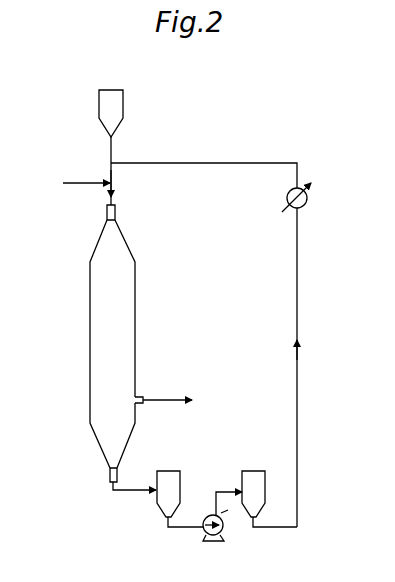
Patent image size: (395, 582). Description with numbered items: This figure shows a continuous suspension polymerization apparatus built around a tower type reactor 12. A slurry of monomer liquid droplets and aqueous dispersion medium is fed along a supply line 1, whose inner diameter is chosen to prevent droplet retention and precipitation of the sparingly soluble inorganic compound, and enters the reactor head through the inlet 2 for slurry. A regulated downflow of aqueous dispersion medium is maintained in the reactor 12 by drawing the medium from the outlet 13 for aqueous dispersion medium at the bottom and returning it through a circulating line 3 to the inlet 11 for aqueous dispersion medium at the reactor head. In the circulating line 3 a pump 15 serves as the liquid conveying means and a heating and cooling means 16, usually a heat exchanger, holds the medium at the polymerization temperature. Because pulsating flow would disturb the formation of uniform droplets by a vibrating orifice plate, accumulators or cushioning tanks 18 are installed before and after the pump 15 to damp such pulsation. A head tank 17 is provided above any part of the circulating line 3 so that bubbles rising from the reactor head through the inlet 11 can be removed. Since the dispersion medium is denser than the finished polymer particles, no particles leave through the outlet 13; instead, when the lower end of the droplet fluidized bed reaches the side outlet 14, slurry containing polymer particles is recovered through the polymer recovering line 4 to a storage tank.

The supply line 1 is at (88, 185).
The inlet for slurry 2 is at (111, 182).
The circulating line 3 is at (297, 323).
The polymer recovering line 4 is at (168, 398).
The inlet for aqueous dispersion medium 11 is at (116, 212).
The tower type reactor 12 is at (90, 333).
The outlet for aqueous dispersion medium 13 is at (110, 473).
The outlet 14 is at (141, 396).
The pump 15 is at (224, 528).
The heating and cooling means 16 is at (308, 200).
The head tank 17 is at (123, 112).
The accumulators or cushioning tanks 18 is at (172, 471).